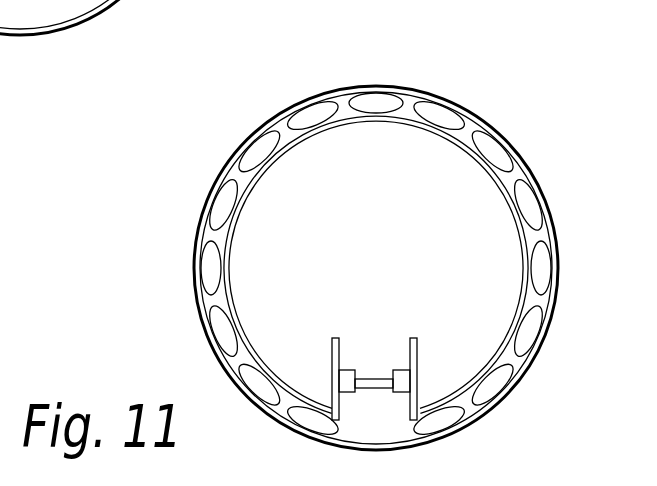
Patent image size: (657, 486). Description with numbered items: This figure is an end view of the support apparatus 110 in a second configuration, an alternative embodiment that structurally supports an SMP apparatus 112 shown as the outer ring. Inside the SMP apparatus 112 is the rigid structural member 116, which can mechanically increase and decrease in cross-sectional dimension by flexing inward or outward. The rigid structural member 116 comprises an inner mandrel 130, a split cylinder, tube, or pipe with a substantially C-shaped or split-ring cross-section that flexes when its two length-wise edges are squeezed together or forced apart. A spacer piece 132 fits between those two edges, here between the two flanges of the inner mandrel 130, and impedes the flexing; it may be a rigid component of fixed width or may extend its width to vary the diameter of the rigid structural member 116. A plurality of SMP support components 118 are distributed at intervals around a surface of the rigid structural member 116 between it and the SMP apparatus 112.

The support apparatus 110 is at (343, 222).
The SMP apparatus 112 is at (195, 216).
The rigid structural member 116 is at (376, 264).
The inner mandrel 130 is at (295, 138).
The SMP support component 118 is at (381, 98).
The spacer piece 132 is at (375, 380).